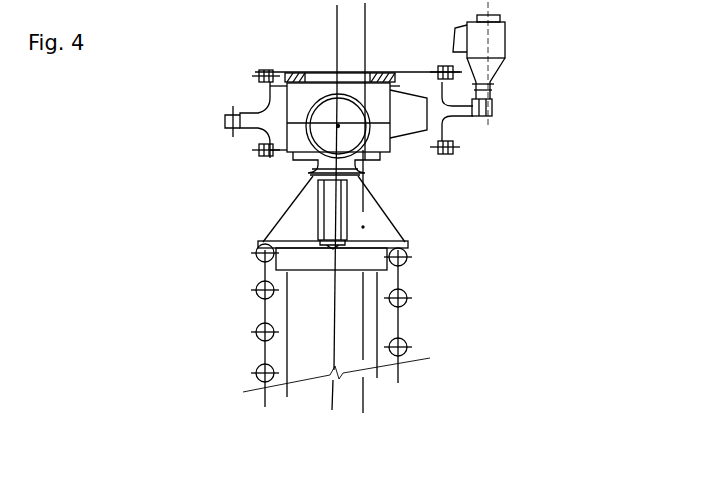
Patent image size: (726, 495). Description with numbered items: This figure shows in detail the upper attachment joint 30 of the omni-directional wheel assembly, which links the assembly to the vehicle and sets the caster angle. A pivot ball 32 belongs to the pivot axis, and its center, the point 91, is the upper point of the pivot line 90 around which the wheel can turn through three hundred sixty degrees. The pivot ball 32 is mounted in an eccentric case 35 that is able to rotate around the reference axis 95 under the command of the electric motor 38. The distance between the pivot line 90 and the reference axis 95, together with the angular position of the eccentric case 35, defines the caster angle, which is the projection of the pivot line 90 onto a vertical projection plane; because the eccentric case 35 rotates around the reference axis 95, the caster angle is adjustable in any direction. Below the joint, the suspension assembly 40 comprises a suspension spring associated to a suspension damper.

The upper attachment joint 30 is at (525, 142).
The pivot ball 32 is at (328, 140).
The eccentric case 35 is at (417, 152).
The electric motor 38 is at (513, 40).
The suspension assembly 40 is at (258, 336).
The pivot line 90 is at (330, 410).
The point 91 is at (338, 126).
The reference axis 95 is at (367, 3).